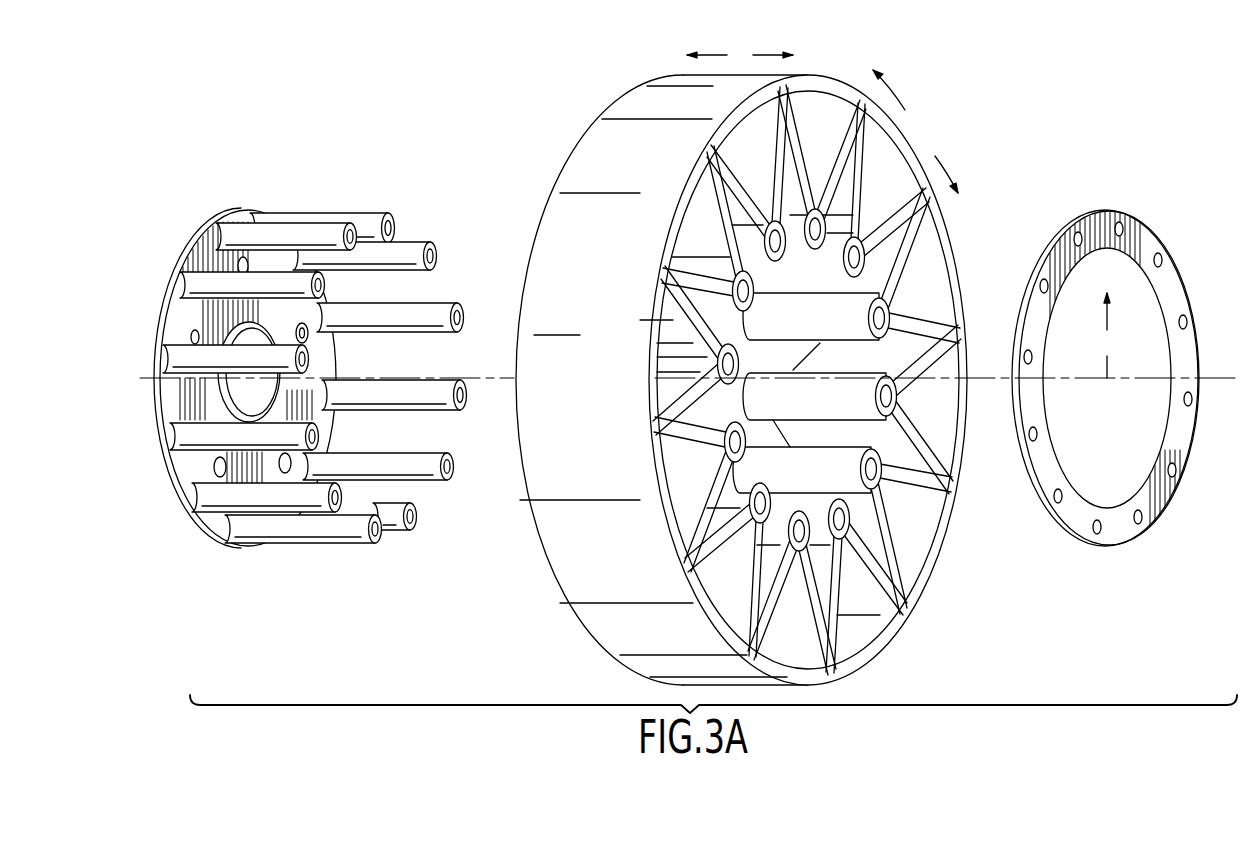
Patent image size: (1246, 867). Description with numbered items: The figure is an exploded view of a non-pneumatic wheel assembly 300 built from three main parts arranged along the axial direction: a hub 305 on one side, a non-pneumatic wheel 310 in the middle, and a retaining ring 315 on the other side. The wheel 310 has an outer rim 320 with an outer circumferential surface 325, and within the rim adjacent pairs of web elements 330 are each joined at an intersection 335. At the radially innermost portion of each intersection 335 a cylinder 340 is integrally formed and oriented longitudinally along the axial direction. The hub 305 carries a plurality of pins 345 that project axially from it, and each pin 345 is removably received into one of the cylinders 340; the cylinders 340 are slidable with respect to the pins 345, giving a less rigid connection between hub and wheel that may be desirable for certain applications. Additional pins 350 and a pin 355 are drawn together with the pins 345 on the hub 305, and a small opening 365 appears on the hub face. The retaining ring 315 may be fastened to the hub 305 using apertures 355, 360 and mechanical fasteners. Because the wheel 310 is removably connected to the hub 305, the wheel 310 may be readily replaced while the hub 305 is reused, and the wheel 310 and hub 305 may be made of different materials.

The non-pneumatic wheel assembly 300 is at (693, 350).
The hub 305 is at (334, 357).
The non-pneumatic wheel 310 is at (760, 350).
The retaining ring 315 is at (1129, 361).
The rim 320 is at (578, 578).
The outer circumferential surface 325 is at (597, 150).
The web elements 330 is at (773, 165).
The intersection 335 is at (868, 244).
The cylinder 340 is at (880, 284).
The pins 345 is at (300, 230).
The tubular member 350 is at (405, 212).
The apertures 355 is at (438, 254).
The apertures 360 is at (1164, 259).
The hole 365 is at (315, 341).